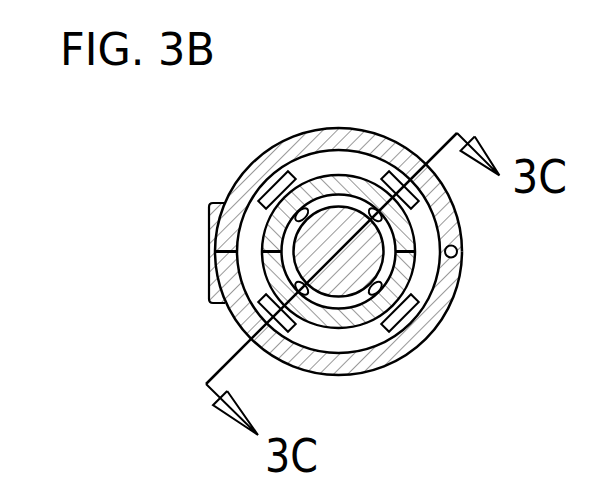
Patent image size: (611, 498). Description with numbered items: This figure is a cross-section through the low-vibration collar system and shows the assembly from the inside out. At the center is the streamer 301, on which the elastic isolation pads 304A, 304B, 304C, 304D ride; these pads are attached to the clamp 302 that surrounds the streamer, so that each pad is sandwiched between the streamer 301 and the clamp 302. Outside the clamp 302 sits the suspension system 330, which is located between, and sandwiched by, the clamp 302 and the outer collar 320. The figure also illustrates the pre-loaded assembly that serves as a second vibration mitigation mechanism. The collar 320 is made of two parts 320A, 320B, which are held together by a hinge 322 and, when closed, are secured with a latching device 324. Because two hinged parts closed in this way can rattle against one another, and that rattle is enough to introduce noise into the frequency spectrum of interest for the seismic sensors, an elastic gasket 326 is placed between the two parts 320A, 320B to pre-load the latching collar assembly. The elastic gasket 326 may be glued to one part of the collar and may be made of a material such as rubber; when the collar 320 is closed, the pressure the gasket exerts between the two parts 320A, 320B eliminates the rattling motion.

The streamer 301 is at (339, 207).
The clamp 302 is at (405, 217).
The elastic isolation pad 304A is at (326, 305).
The elastic isolation pad 304B is at (381, 280).
The elastic isolation pad 304C is at (378, 212).
The elastic isolation pad 304D is at (300, 210).
The collar 320 is at (241, 178).
The first collar part 320A is at (265, 165).
The second collar part 320B is at (295, 358).
The hinge 322 is at (458, 253).
The latching device 324 is at (215, 203).
The elastic gasket 326 is at (218, 255).
The suspension system 330 is at (410, 316).